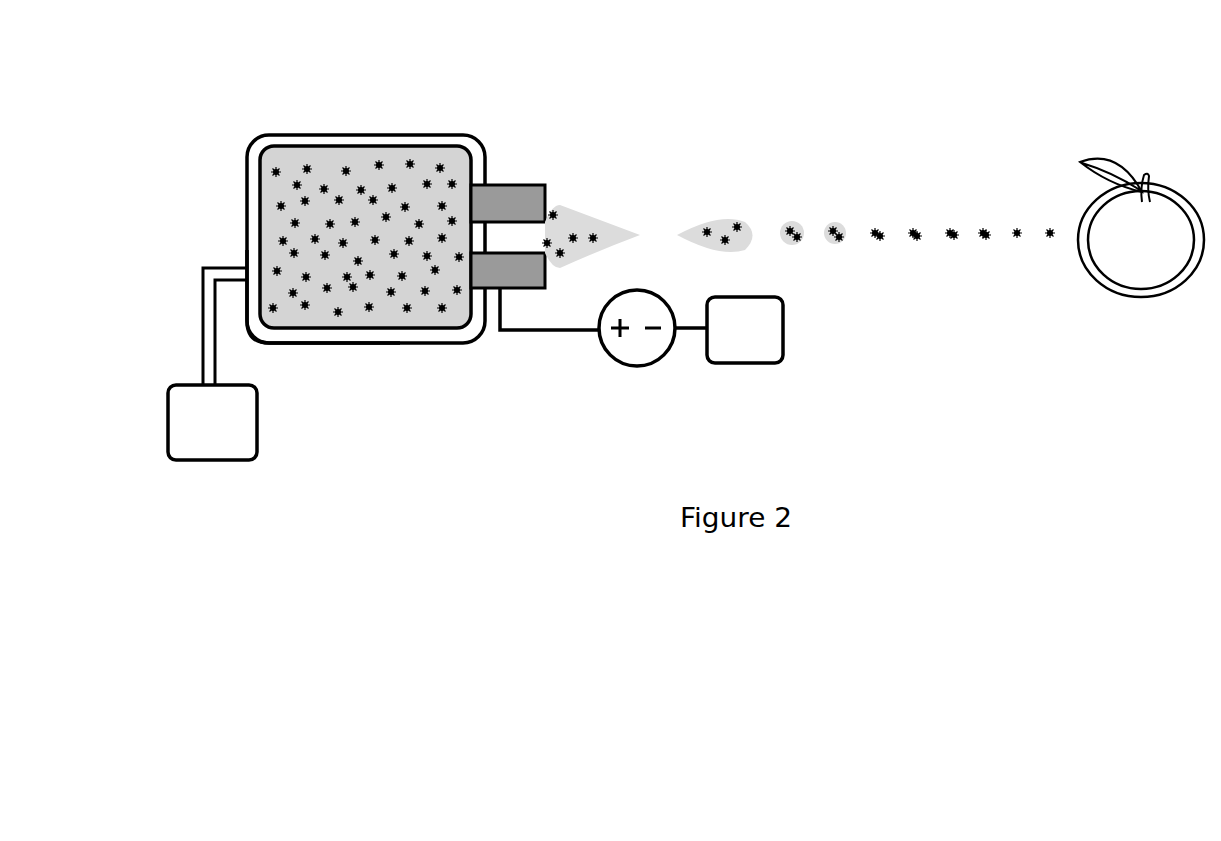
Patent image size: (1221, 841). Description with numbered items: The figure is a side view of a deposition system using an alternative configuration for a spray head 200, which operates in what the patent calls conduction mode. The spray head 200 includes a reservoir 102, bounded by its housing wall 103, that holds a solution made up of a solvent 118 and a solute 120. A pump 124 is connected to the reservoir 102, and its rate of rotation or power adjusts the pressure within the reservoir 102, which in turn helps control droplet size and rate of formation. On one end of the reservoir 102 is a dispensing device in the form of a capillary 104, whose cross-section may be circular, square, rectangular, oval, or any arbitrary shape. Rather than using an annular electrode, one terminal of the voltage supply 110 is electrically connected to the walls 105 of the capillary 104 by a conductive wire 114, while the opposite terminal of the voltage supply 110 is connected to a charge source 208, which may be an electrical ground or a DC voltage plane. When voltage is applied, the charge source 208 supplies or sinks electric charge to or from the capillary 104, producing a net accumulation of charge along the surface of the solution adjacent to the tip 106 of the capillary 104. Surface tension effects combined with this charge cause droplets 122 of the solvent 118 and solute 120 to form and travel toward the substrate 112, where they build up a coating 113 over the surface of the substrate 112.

The spray head 200 is at (503, 90).
The reservoir 102 is at (535, 125).
The reservoir housing wall 103 is at (393, 333).
The solvent 118 is at (295, 323).
The solute 120 is at (343, 300).
The walls of the capillary 105 is at (532, 203).
The capillary 104 is at (550, 358).
The tip of the capillary 106 is at (553, 235).
The conductive wire 114 is at (557, 332).
The voltage supply 110 is at (640, 357).
The charge source 208 is at (767, 358).
The pump 124 is at (243, 450).
The droplets 122 is at (793, 250).
The substrate 112 is at (1138, 270).
The coating 113 is at (1118, 287).